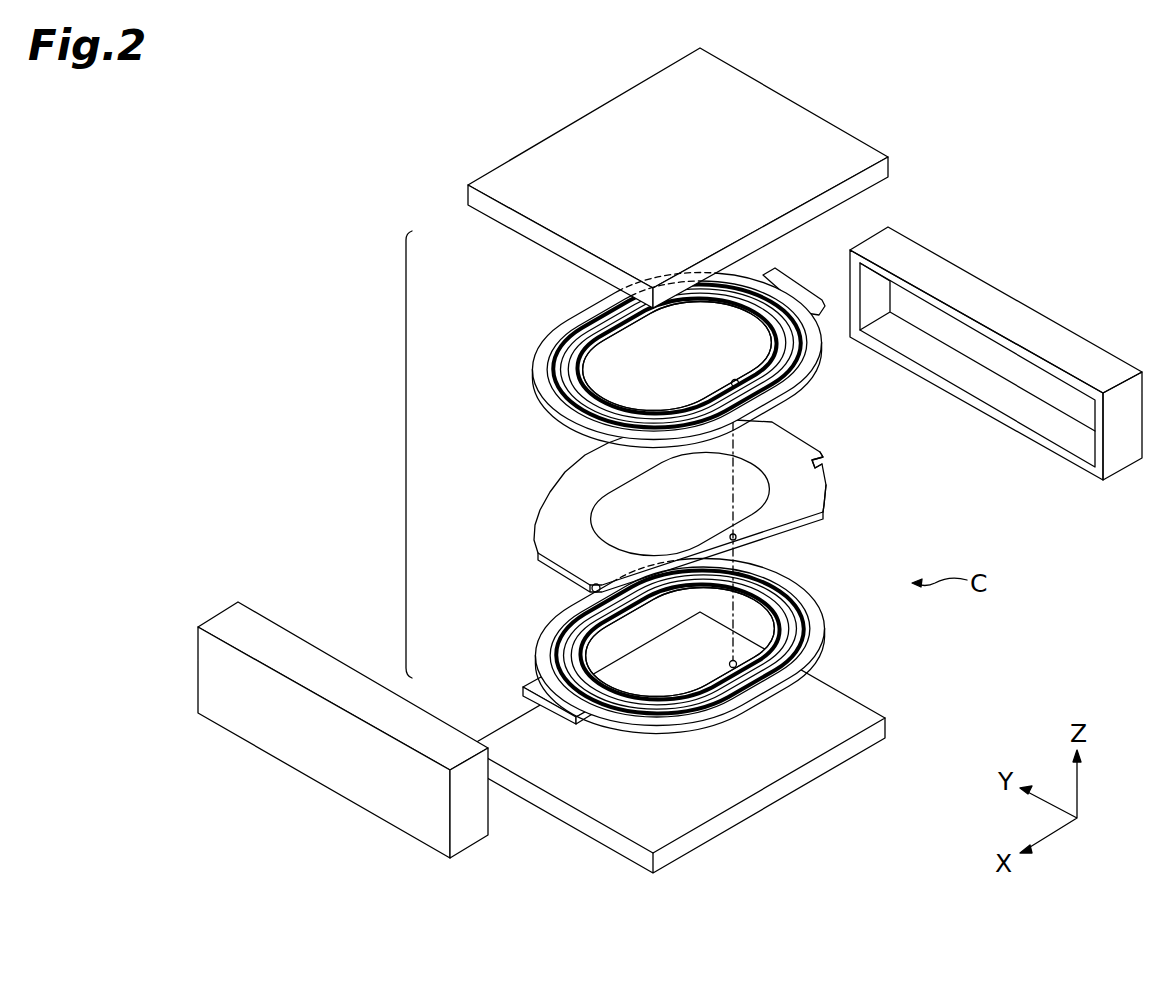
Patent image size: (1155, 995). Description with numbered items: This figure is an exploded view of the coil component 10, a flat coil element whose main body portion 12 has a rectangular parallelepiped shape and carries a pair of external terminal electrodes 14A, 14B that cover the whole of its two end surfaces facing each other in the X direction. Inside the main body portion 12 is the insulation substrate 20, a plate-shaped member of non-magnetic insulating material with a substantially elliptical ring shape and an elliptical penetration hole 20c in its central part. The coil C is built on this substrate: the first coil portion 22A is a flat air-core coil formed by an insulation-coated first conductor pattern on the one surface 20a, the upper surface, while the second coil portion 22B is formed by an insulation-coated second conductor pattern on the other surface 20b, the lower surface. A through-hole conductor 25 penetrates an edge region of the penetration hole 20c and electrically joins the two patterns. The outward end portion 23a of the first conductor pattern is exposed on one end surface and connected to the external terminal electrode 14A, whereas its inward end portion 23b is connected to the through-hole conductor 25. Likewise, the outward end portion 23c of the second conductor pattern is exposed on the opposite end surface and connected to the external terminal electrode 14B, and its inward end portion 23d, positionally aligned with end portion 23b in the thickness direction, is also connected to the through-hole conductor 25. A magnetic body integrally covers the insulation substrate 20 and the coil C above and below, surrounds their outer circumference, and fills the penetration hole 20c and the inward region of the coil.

The coil component 10 is at (336, 162).
The main body portion 12 is at (406, 455).
The external terminal electrode 14A is at (1007, 302).
The external terminal electrode 14B is at (258, 632).
The insulation substrate 20 is at (552, 508).
The one surface of the insulation substrate 20a is at (808, 486).
The other surface of the insulation substrate 20b is at (820, 523).
The penetration hole 20c is at (640, 482).
The first coil portion 22A is at (540, 357).
The second coil portion 22B is at (545, 620).
The end portion of the first conductor pattern on the outward side 23a is at (782, 288).
The end portion of the first conductor pattern on the inward side 23b is at (732, 381).
The end portion of the second conductor pattern on the outward side 23c is at (530, 670).
The end portion of the second conductor pattern on the inward side 23d is at (728, 664).
The through-hole conductor 25 is at (730, 536).